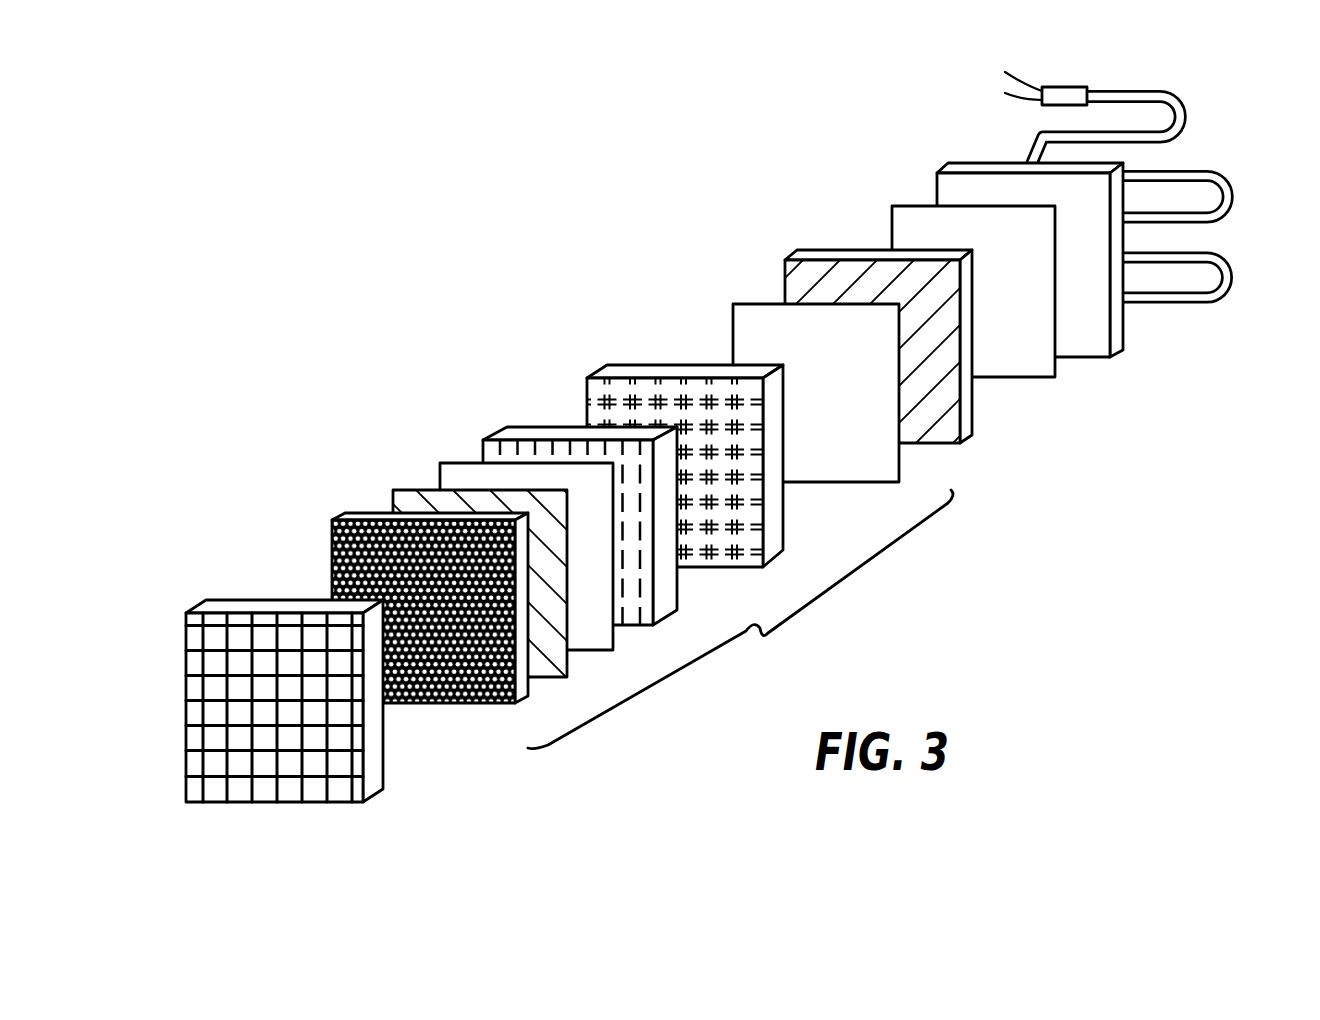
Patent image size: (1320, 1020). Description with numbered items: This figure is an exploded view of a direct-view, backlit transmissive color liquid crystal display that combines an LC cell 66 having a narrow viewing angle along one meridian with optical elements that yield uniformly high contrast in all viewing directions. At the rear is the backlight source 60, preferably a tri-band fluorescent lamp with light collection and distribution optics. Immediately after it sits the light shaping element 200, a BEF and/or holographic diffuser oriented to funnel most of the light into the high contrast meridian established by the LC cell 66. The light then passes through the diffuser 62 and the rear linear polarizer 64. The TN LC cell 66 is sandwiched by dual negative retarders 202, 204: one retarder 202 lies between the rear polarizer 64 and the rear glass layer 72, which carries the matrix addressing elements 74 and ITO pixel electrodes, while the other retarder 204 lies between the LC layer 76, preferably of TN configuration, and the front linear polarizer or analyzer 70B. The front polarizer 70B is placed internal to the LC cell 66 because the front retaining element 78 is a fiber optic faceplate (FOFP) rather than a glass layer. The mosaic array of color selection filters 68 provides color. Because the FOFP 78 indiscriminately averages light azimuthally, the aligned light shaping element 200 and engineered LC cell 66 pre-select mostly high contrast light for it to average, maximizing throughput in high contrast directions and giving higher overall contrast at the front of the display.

The backlight source 60 is at (1227, 197).
The diffuser 62 is at (1117, 328).
The rear linear polarizer 64 is at (965, 429).
The LC cell 66 is at (740, 619).
The mosaic array of color selection filters 68 is at (368, 769).
The front linear polarizer or analyzer 70B is at (556, 669).
The rear glass layer 72 is at (650, 440).
The matrix addressing elements 74 is at (600, 401).
The LC layer 76 is at (490, 455).
The front retaining element 78 is at (328, 547).
The light shaping element 200 is at (902, 233).
The negative retarder 202 is at (752, 332).
The negative retarder 204 is at (450, 478).